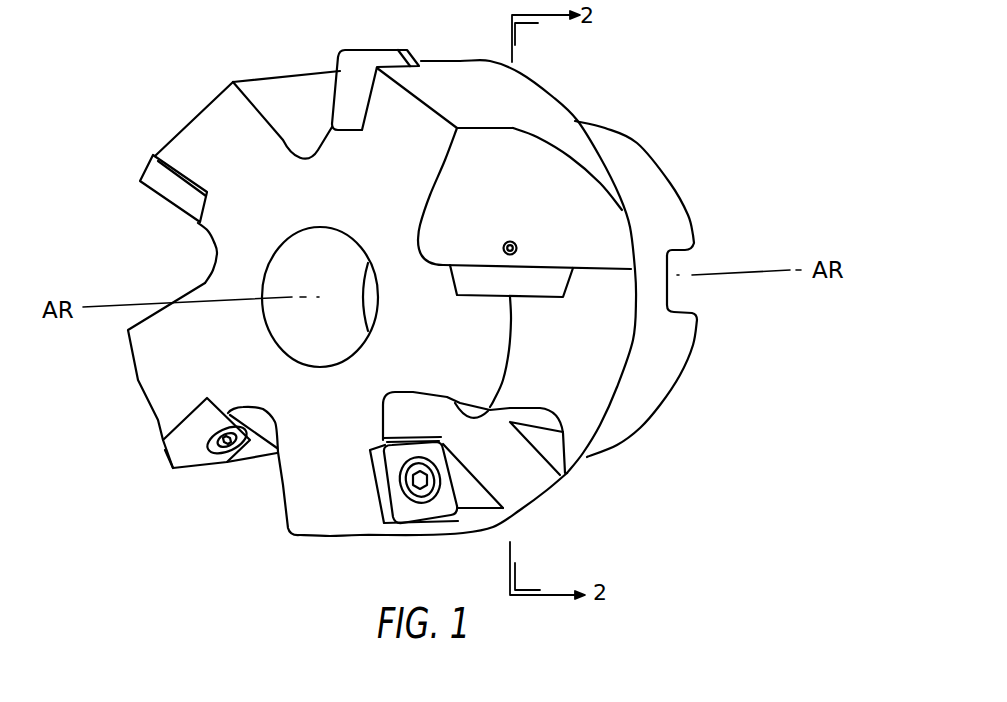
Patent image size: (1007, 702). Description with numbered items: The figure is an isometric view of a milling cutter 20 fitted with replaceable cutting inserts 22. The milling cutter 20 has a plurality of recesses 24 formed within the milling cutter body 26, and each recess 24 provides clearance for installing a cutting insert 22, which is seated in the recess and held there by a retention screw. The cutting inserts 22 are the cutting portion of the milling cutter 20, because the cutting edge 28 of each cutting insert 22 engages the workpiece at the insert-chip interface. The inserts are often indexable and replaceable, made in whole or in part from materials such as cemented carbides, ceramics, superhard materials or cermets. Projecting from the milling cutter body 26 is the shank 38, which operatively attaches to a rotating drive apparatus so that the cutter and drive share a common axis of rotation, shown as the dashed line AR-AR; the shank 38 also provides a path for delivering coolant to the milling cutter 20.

The milling cutter 20 is at (166, 84).
The cutting insert 22 is at (170, 456).
The recess 24 is at (527, 178).
The milling cutter body 26 is at (200, 373).
The cutting edge 28 is at (464, 522).
The shank 38 is at (667, 232).